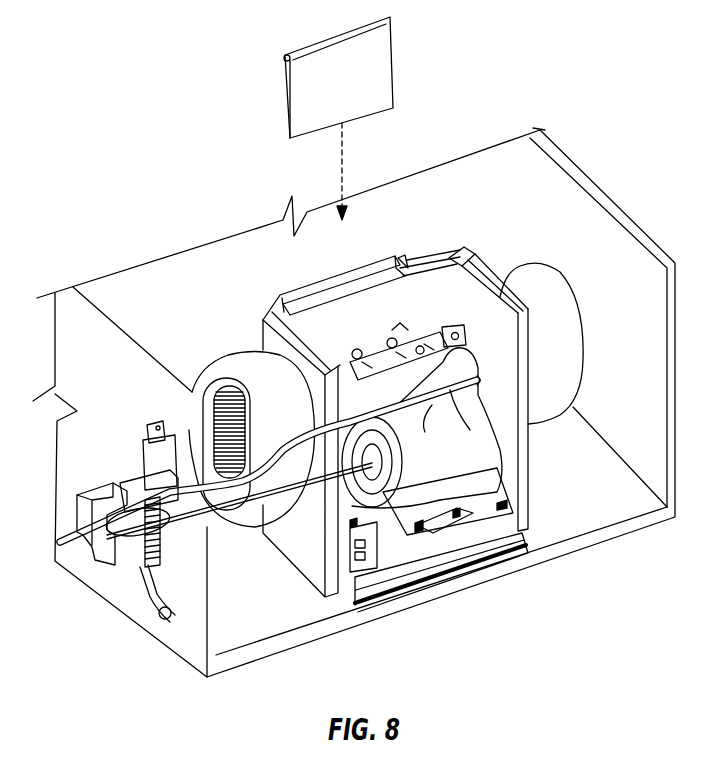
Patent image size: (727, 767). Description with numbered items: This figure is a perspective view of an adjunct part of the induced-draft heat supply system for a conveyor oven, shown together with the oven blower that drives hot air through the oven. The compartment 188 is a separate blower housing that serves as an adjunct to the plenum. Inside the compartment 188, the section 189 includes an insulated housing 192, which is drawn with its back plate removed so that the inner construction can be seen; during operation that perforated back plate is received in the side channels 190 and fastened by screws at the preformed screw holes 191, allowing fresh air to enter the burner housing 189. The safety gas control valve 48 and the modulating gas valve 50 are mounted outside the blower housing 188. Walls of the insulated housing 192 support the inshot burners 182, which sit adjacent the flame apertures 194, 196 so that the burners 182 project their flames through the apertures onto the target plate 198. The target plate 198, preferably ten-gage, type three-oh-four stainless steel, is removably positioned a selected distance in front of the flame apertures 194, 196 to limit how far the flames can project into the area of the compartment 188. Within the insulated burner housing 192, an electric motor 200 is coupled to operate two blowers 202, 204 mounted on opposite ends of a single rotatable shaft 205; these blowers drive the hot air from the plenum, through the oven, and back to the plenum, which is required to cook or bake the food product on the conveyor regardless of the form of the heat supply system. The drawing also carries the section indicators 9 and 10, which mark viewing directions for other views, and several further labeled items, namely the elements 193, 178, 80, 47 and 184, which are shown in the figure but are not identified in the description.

The compartment 188 is at (606, 493).
The target plate 198 is at (377, 58).
The frame rails 193 is at (290, 318).
The flame aperture 194 is at (300, 330).
The flame aperture 196 is at (396, 330).
The section 189 is at (476, 250).
The insulated housing 192 is at (313, 557).
The blower 204 is at (521, 278).
The blower 202 is at (243, 368).
The hose 178 is at (320, 426).
The inshot burners 182 is at (418, 350).
The rotatable shaft 205 is at (466, 340).
The bracket 80 is at (450, 392).
The electric motor 200 is at (451, 485).
The side channels 190 is at (533, 545).
The preformed screw holes 191 is at (487, 553).
The modulating gas valve 50 is at (143, 452).
The safety gas control valve 48 is at (141, 562).
The pipe fitting 47 is at (144, 616).
The tube clamp 184 is at (167, 541).
The section line 10 is at (364, 204).
The section line 9 is at (196, 296).